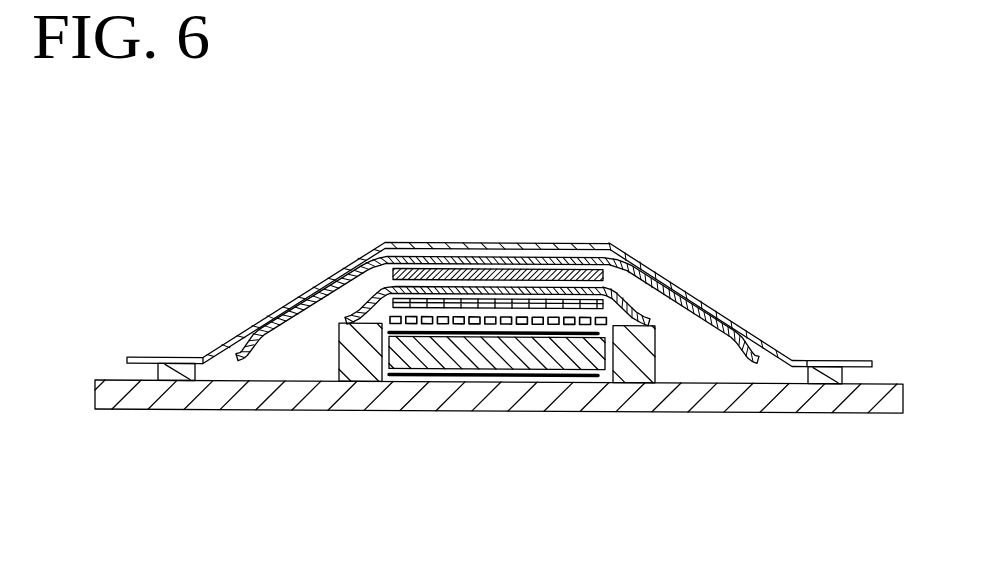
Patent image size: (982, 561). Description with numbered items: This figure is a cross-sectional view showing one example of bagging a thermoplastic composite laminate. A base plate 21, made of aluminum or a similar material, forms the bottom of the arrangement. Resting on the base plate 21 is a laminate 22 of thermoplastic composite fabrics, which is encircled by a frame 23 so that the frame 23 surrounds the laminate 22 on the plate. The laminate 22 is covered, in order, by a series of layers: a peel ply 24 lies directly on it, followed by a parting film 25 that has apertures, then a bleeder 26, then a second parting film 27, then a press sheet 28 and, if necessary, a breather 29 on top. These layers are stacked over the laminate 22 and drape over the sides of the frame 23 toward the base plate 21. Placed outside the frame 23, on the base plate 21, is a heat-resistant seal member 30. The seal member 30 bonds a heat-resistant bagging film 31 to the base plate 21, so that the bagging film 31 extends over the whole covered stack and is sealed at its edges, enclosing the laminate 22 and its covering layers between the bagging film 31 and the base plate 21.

The base plate 21 is at (297, 400).
The laminate 22 is at (462, 364).
The frame 23 is at (358, 373).
The peel ply 24 is at (578, 374).
The parting film 25 is at (607, 317).
The bleeder 26 is at (603, 274).
The parting film 27 is at (360, 284).
The press sheet 28 is at (393, 241).
The breather 29 is at (307, 323).
The heat-resistant seal member 30 is at (158, 374).
The heat-resistant bagging film 31 is at (242, 329).